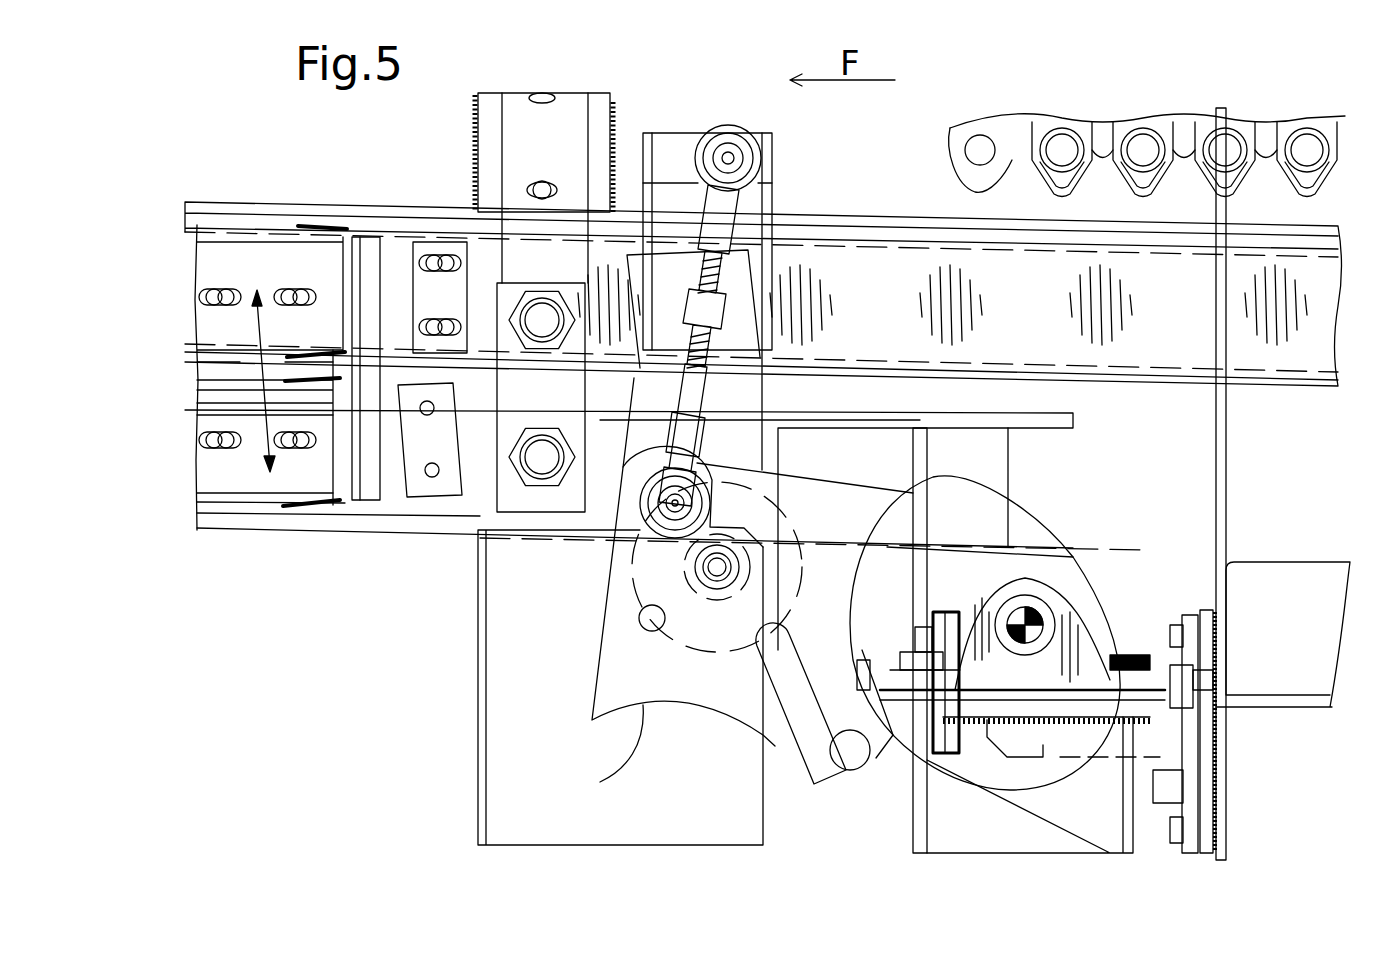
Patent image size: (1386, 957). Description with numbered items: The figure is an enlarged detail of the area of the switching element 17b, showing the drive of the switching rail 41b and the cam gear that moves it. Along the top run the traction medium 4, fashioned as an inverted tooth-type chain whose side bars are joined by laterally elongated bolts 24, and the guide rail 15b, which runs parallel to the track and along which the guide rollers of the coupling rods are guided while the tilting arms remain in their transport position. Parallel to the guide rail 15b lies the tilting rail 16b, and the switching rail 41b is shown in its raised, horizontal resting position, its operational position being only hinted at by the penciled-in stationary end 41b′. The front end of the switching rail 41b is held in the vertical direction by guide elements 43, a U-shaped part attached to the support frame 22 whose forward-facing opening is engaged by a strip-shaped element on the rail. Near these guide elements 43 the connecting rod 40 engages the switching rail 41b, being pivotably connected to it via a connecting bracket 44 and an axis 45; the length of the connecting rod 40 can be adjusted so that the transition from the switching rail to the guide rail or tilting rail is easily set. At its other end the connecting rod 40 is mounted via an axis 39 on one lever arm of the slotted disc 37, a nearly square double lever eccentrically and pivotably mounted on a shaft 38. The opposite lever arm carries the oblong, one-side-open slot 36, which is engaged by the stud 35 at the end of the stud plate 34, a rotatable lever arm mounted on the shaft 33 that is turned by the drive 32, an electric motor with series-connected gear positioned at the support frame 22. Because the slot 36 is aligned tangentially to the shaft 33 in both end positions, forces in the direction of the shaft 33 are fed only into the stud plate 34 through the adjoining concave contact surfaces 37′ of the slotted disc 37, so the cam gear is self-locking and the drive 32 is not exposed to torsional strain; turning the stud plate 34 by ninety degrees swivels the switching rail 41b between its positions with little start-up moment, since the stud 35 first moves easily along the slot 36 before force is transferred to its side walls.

The guide rail 15b is at (230, 252).
The tilting rail 16b is at (222, 478).
The switching rail 41b is at (447, 240).
The stationary end of the switching rail 41b′ is at (240, 382).
The guide elements 43 is at (378, 240).
The switching element 17b is at (702, 83).
The connecting bracket 44 is at (668, 160).
The axis 45 is at (735, 145).
The connecting rod 40 is at (718, 313).
The axis 39 is at (665, 505).
The shaft 38 is at (712, 572).
The slotted disc 37 is at (620, 678).
The concave contact surfaces 37′ is at (594, 781).
The slot 36 is at (806, 708).
The stud 35 is at (849, 770).
The stud plate 34 is at (914, 760).
The shaft 33 is at (1033, 640).
The drive 32 is at (1115, 550).
The support frame 22 is at (1265, 700).
The bolt 24 is at (1064, 145).
The traction medium 4 is at (1268, 132).